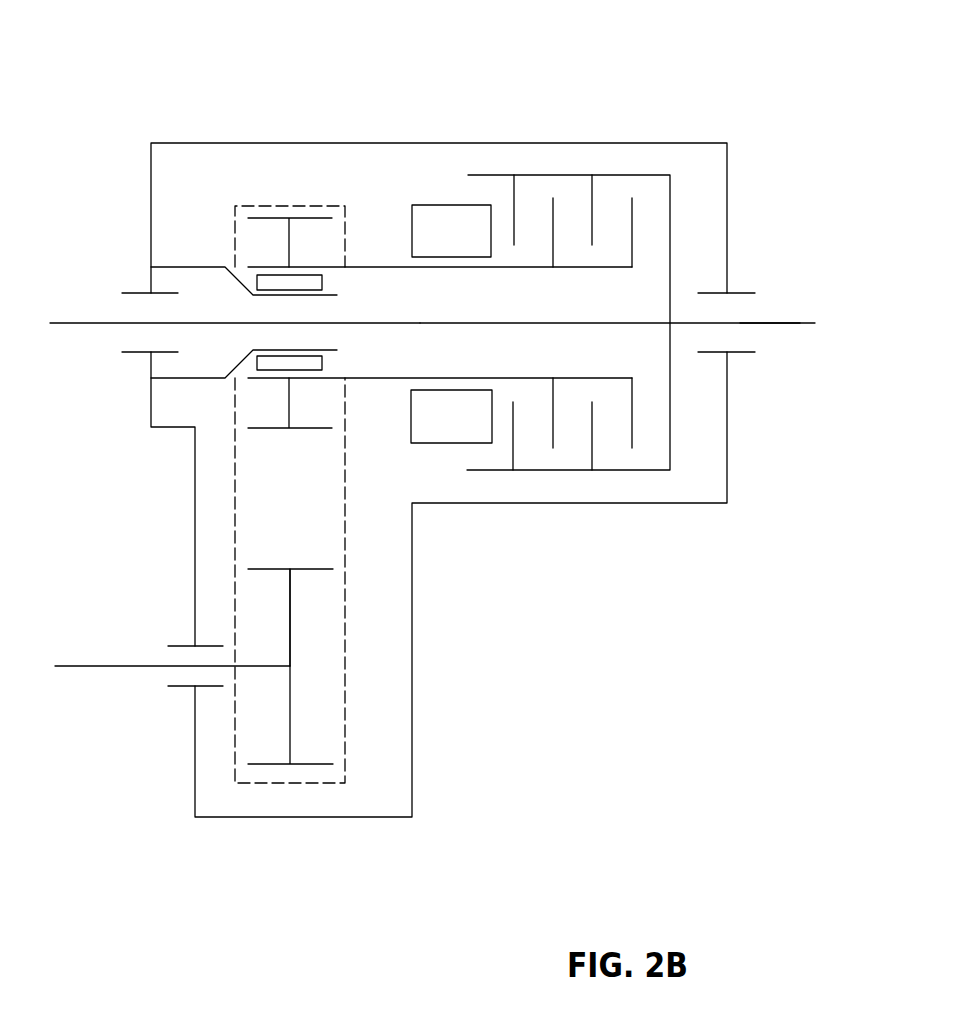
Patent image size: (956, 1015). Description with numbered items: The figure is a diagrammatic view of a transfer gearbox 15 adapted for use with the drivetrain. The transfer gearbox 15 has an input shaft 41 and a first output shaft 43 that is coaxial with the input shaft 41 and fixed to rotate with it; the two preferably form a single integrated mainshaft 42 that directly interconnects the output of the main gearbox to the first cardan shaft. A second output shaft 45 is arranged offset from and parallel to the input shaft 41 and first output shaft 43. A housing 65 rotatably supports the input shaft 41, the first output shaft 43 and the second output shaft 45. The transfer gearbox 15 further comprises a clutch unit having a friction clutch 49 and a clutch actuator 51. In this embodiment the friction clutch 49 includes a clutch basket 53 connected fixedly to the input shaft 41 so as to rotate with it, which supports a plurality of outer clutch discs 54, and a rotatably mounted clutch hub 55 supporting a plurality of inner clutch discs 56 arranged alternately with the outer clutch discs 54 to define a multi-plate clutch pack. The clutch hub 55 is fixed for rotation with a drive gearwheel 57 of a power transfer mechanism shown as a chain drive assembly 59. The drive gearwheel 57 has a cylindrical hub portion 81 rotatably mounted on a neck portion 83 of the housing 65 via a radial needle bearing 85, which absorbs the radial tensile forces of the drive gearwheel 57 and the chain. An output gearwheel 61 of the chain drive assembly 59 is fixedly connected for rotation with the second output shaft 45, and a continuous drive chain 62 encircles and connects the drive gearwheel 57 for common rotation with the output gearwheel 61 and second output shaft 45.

The transfer gearbox 15 is at (355, 66).
The housing 65 is at (208, 144).
The input shaft 41 is at (85, 323).
The first output shaft 43 is at (780, 323).
The mainshaft 42 is at (768, 324).
The neck portion 83 is at (243, 285).
The radial needle bearing 85 is at (282, 282).
The cylindrical hub portion 81 is at (277, 379).
The drive gearwheel 57 is at (288, 216).
The drive chain 62 is at (346, 708).
The chain drive assembly 59 is at (365, 612).
The output gearwheel 61 is at (275, 766).
The second output shaft 45 is at (107, 666).
The friction clutch 49 is at (634, 169).
The clutch actuator 51 is at (441, 200).
The outer clutch discs 54 is at (592, 195).
The clutch hub 55 is at (565, 269).
The clutch basket 53 is at (583, 470).
The inner clutch discs 56 is at (632, 418).